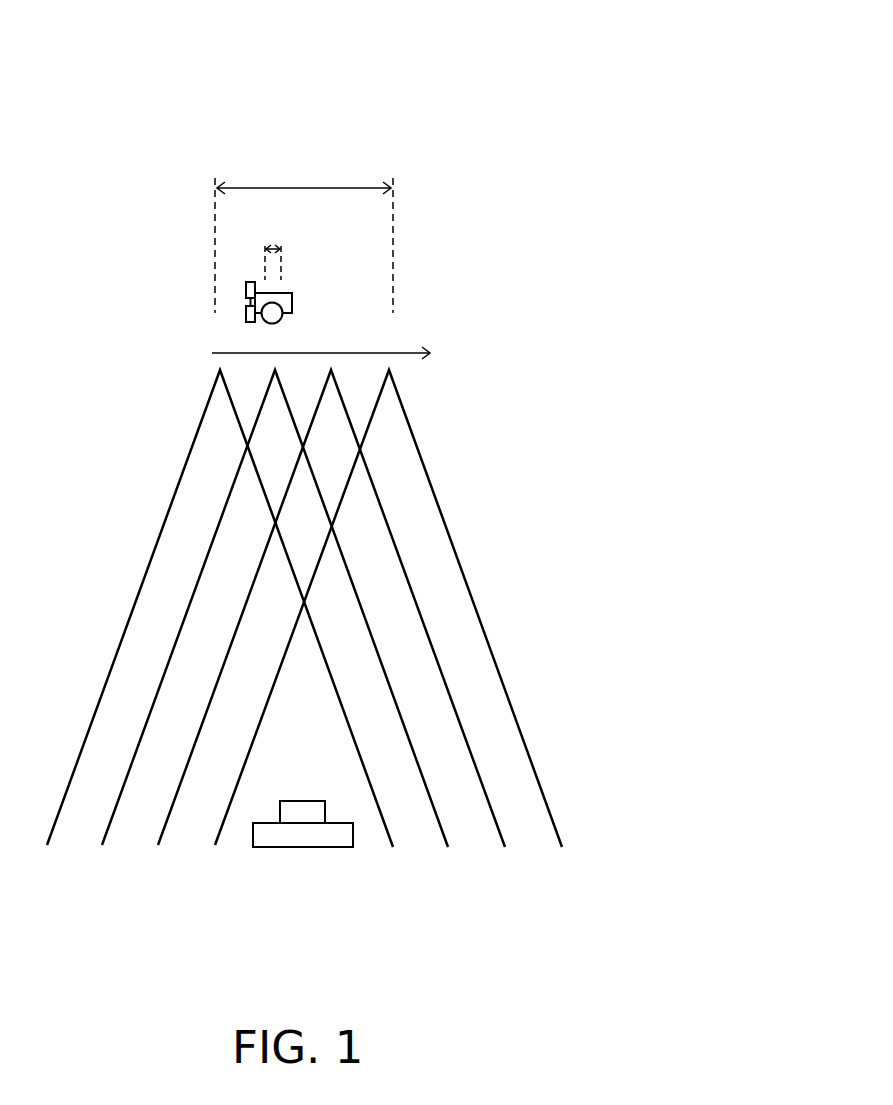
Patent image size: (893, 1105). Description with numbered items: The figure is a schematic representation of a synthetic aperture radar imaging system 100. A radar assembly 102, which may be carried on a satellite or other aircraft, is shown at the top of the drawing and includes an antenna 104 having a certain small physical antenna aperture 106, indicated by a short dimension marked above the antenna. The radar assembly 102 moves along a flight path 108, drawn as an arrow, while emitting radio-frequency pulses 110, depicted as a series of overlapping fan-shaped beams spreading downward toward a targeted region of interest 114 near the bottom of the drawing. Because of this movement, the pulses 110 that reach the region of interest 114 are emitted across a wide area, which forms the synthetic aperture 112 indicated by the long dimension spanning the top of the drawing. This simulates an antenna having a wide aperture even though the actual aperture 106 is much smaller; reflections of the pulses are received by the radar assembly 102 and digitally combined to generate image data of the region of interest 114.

The synthetic aperture radar imaging system 100 is at (693, 52).
The radar assembly 102 is at (245, 292).
The antenna 104 is at (283, 318).
The antenna aperture 106 is at (272, 242).
The flight path 108 is at (212, 353).
The radio-frequency pulses 110 is at (204, 414).
The synthetic aperture 112 is at (222, 175).
The region of interest 114 is at (302, 859).